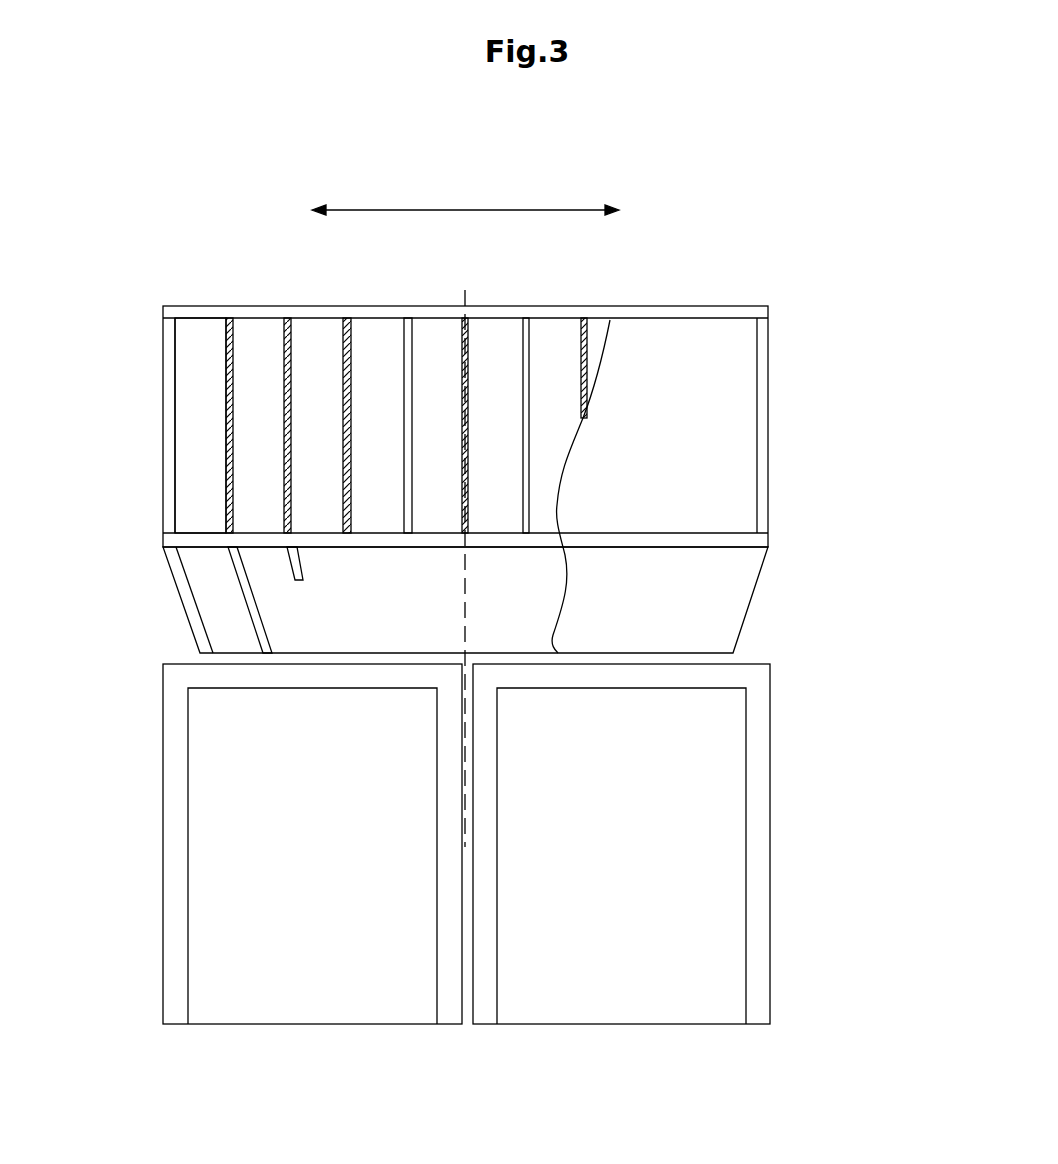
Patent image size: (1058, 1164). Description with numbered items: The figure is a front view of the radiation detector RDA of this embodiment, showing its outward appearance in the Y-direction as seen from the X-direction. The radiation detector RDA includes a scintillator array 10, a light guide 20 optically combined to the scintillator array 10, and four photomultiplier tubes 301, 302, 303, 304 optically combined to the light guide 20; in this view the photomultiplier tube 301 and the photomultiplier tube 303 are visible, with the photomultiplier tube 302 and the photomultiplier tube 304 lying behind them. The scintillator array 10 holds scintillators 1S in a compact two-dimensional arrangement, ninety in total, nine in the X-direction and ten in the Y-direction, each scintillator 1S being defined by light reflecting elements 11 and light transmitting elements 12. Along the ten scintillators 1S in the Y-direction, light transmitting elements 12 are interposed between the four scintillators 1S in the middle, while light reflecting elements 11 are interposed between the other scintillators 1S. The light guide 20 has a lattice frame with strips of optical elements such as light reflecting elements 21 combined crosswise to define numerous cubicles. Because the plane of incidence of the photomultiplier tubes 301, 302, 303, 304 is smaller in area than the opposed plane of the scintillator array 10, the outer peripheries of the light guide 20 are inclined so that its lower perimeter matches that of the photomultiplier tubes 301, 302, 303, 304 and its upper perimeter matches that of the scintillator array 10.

The radiation detector RDA is at (697, 276).
The scintillator array 10 is at (783, 445).
The scintillator 1S is at (212, 338).
The light reflecting element 11 is at (612, 283).
The light transmitting element 12 is at (522, 343).
The light guide 20 is at (733, 598).
The light reflecting element 21 is at (240, 596).
The photomultiplier tube 301 is at (310, 1000).
The photomultiplier tube 302 is at (312, 902).
The photomultiplier tube 303 is at (649, 1000).
The photomultiplier tube 304 is at (621, 902).